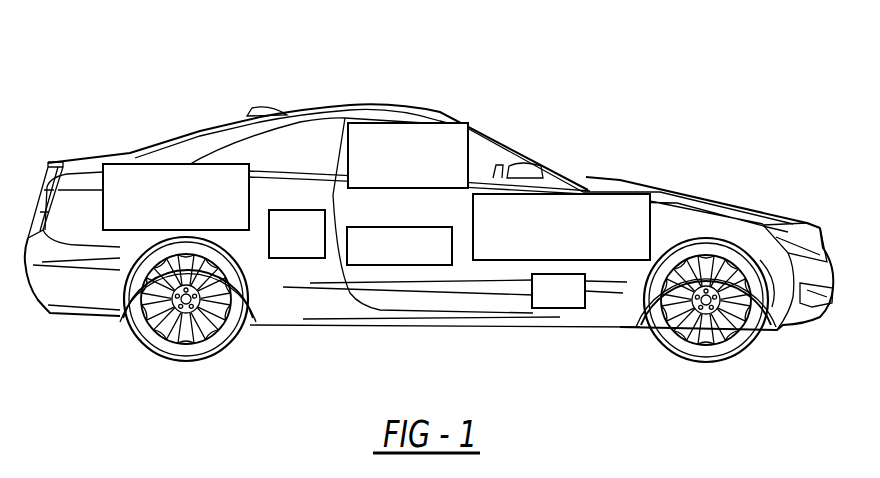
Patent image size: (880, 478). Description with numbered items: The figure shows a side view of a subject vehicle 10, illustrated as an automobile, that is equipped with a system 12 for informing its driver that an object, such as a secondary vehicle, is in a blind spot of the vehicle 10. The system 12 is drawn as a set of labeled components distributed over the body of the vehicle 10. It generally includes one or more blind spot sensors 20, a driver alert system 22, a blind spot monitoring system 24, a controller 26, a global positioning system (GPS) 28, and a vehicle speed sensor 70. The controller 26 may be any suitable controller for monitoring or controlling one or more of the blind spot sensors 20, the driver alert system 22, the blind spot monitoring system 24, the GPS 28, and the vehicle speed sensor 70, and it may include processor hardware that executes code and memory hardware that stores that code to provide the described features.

The vehicle 10 is at (219, 51).
The system 12 is at (589, 150).
The blind spot sensors 20 is at (167, 165).
The driver alert system 22 is at (468, 147).
The blind spot monitoring system 24 is at (650, 222).
The controller 26 is at (398, 265).
The global positioning system (GPS) 28 is at (297, 213).
The vehicle speed sensor 70 is at (557, 310).